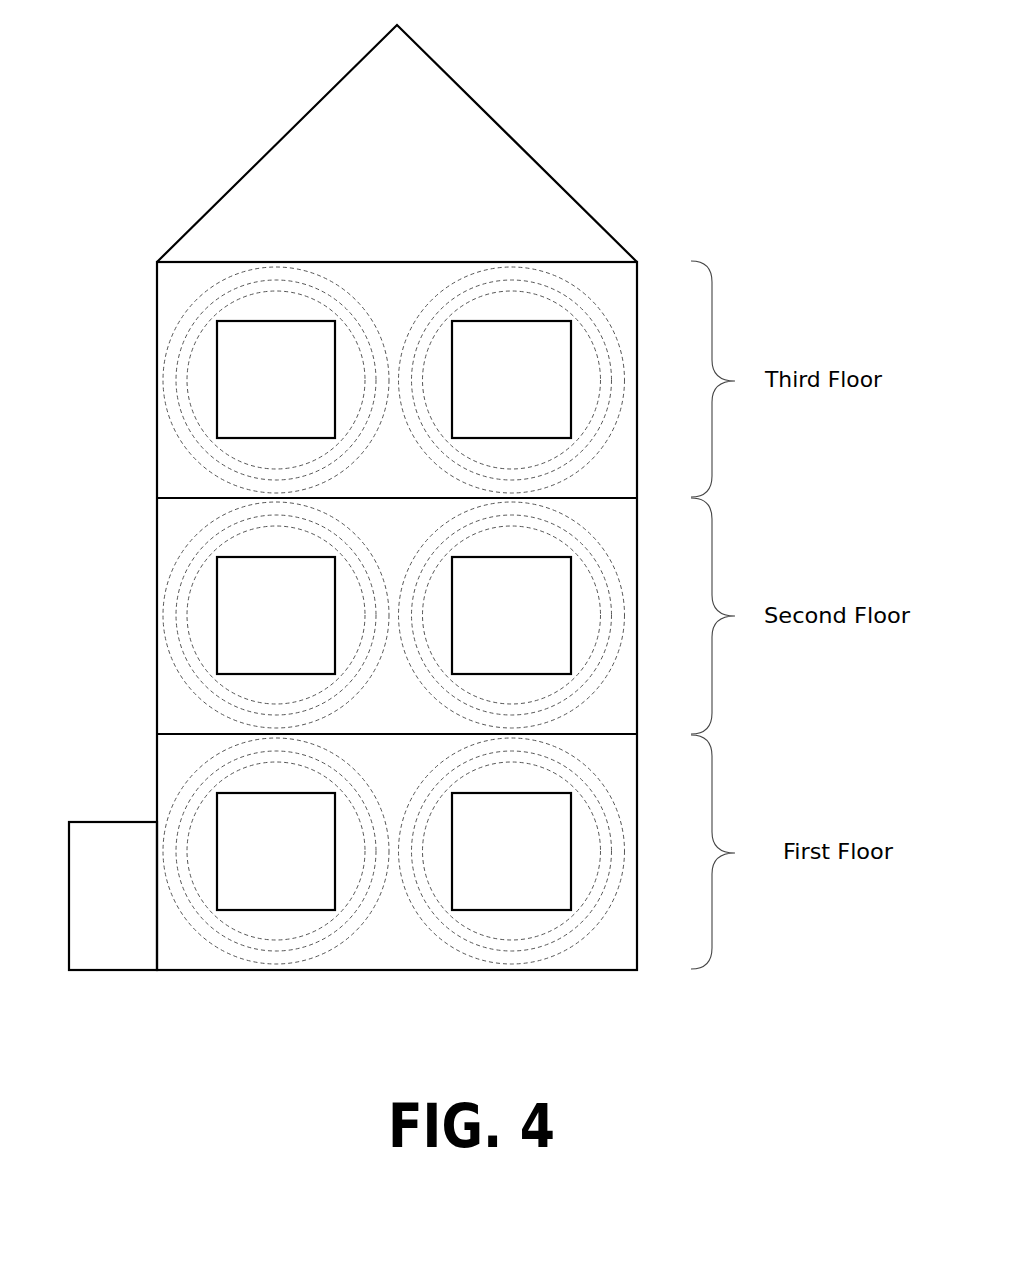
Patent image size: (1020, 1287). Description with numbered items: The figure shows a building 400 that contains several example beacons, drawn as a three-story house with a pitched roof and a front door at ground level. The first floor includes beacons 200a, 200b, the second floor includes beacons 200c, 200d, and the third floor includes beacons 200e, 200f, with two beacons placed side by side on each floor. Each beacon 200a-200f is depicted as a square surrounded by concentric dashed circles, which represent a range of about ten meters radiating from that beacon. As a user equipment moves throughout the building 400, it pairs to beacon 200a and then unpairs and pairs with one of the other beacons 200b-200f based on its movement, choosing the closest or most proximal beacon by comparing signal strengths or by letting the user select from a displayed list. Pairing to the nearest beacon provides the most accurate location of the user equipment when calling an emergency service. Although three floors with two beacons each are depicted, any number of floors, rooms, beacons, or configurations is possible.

The building 400 is at (88, 360).
The beacon 200a is at (276, 851).
The beacon 200b is at (512, 851).
The beacon 200c is at (276, 615).
The beacon 200d is at (512, 615).
The beacon 200e is at (276, 380).
The beacon 200f is at (512, 380).